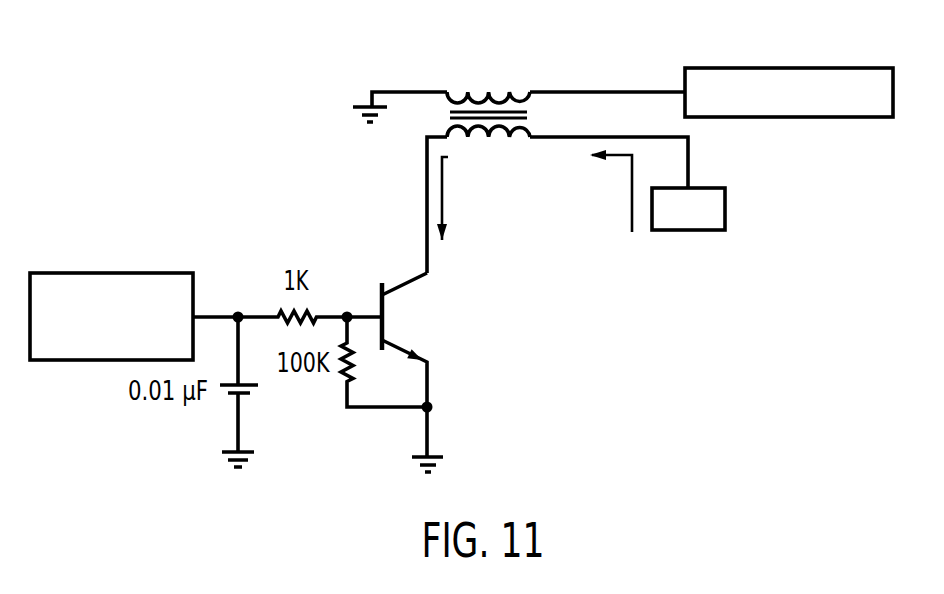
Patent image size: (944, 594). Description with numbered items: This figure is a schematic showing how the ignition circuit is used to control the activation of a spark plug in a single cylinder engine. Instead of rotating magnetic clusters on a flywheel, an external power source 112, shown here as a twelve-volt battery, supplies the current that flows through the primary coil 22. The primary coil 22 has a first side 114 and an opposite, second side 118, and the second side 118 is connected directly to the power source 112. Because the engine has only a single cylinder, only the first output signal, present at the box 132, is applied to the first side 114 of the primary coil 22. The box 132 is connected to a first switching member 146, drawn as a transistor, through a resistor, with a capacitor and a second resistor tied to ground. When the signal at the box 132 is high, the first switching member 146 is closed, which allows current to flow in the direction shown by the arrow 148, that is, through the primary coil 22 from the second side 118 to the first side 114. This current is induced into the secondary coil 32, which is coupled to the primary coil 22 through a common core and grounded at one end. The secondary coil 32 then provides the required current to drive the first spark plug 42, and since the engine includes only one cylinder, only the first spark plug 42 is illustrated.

The box 132 is at (108, 272).
The first switching member 146 is at (387, 323).
The first side 114 is at (428, 205).
The primary coil 22 is at (530, 135).
The secondary coil 32 is at (520, 92).
The first spark plug 42 is at (788, 67).
The second side 118 is at (660, 136).
The power source 112 is at (725, 208).
The arrow 148 is at (632, 200).